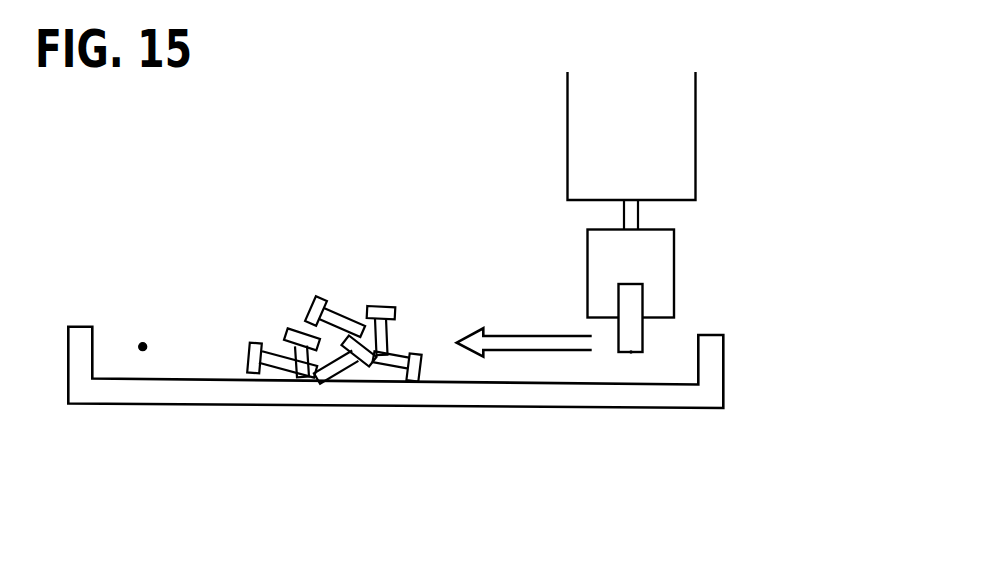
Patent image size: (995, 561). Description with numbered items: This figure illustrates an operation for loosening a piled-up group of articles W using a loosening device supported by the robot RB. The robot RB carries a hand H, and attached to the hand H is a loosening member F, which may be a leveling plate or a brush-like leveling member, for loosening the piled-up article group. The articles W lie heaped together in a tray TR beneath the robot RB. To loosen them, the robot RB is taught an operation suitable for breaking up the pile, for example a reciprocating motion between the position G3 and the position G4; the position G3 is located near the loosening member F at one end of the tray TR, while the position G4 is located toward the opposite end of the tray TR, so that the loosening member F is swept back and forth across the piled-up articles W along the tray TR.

The robot RB is at (665, 131).
The hand H is at (653, 268).
The loosening member F is at (623, 296).
The position G3 is at (631, 352).
The position G4 is at (142, 350).
The tray TR is at (533, 397).
The workpiece W is at (282, 293).